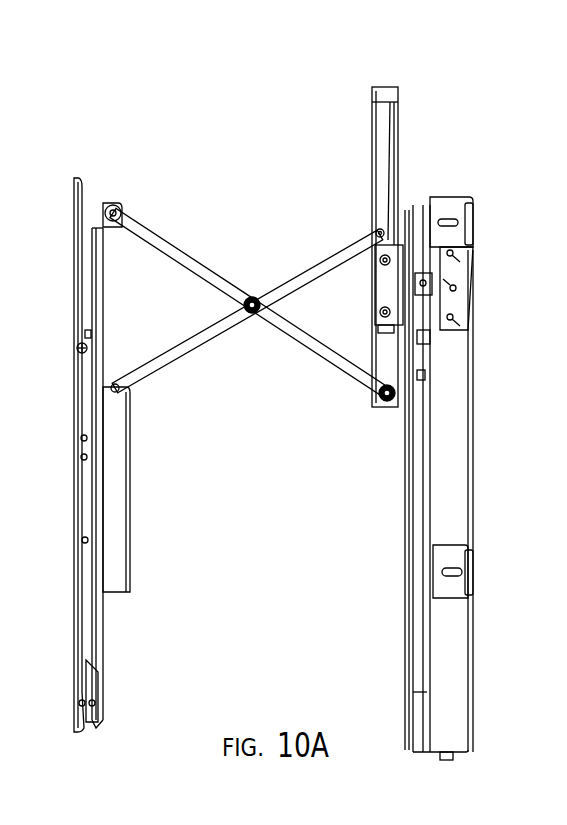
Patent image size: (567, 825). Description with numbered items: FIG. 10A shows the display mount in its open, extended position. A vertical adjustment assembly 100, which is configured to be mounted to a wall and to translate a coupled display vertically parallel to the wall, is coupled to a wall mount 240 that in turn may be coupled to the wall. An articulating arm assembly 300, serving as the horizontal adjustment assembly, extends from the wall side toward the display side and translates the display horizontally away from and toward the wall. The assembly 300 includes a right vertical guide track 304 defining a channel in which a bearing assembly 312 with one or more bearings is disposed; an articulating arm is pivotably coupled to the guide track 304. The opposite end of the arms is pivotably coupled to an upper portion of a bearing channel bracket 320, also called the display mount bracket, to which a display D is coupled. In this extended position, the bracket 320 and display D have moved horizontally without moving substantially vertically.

The vertical adjustment assembly 100 is at (496, 246).
The wall mount 240 is at (473, 568).
The articulating arm assembly 300 is at (292, 195).
The right vertical guide track 304 is at (396, 110).
The bearing assembly 312 is at (393, 236).
The bearing channel bracket 320 is at (140, 597).
The display D is at (48, 718).